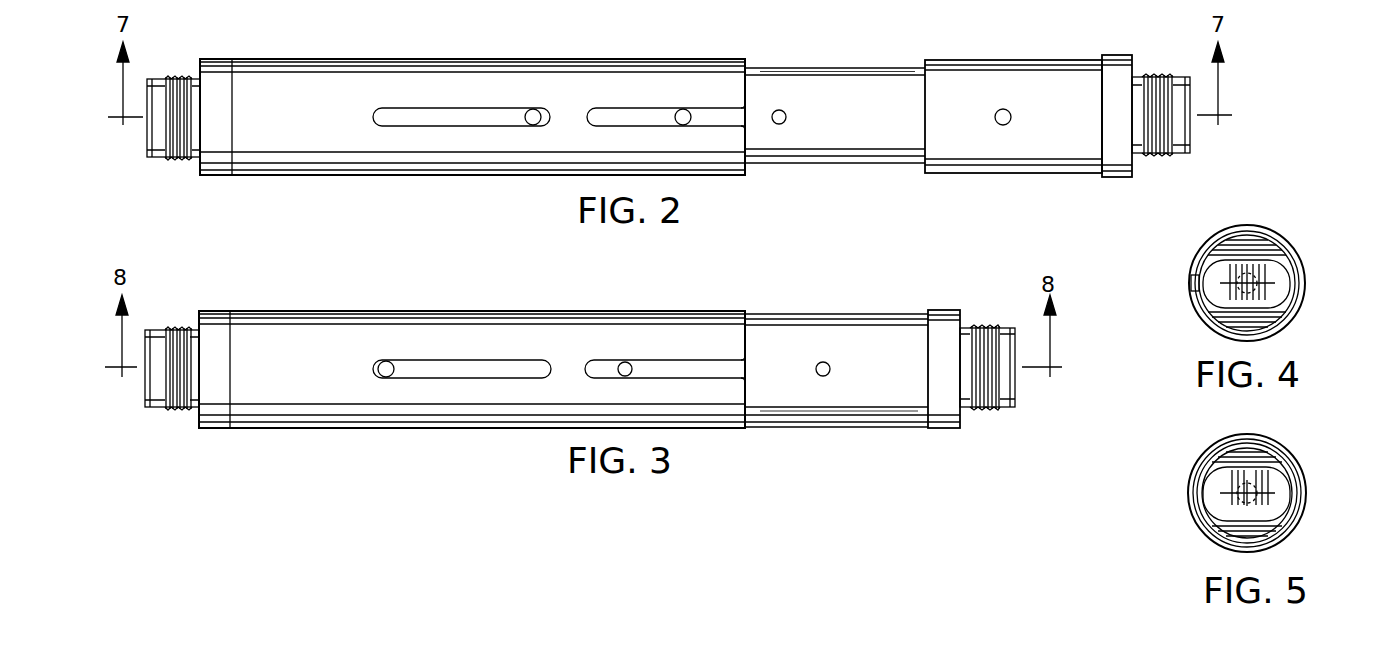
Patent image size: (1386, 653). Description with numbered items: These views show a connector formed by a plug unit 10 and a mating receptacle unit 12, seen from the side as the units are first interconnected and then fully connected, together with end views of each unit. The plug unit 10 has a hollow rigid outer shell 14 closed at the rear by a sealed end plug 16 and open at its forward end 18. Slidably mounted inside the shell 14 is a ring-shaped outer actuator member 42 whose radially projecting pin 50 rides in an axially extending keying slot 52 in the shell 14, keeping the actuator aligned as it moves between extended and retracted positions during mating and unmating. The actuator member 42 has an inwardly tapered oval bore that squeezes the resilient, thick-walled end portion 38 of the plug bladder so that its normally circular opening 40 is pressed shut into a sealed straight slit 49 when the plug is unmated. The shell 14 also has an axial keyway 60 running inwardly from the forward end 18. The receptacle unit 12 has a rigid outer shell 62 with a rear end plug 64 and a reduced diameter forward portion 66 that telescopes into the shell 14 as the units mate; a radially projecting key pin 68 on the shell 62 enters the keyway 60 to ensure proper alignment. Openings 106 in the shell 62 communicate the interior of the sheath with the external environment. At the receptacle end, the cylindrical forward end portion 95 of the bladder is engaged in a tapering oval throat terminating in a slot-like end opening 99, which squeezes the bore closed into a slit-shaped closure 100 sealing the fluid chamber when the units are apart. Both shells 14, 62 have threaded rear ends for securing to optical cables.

In FIG. 2, the plug unit 10 is at (395, 179).
In FIG. 3, the plug unit 10 is at (368, 431).
In FIG. 4, the plug unit 10 is at (1247, 225).
In FIG. 2, the receptacle unit 12 is at (870, 170).
In FIG. 3, the receptacle unit 12 is at (818, 431).
In FIG. 5, the receptacle unit 12 is at (1274, 437).
In FIG. 2, the outer body or shell 14 is at (480, 78).
In FIG. 3, the outer body or shell 14 is at (580, 333).
In FIG. 4, the outer body or shell 14 is at (1193, 258).
In FIG. 2, the rear end wall or end plug 16 is at (216, 61).
In FIG. 3, the rear end wall or end plug 16 is at (216, 313).
In FIG. 2, the open forward end 18 is at (748, 172).
In FIG. 4, the end portion 38 is at (1282, 268).
In FIG. 4, the opening 40 is at (1296, 309).
In FIG. 4, the outer actuator member 42 is at (1258, 243).
In FIG. 4, the slit 49 is at (1227, 283).
In FIG. 2, the pin or stud 50 is at (534, 109).
In FIG. 3, the pin or stud 50 is at (387, 361).
In FIG. 2, the keying slot 52 is at (400, 125).
In FIG. 3, the keying slot 52 is at (492, 377).
In FIG. 2, the keyway or slot 60 is at (640, 126).
In FIG. 3, the keyway or slot 60 is at (690, 378).
In FIG. 4, the keyway or slot 60 is at (1192, 286).
In FIG. 2, the outer shell 62 is at (1055, 150).
In FIG. 3, the outer shell 62 is at (900, 412).
In FIG. 5, the outer shell 62 is at (1220, 445).
In FIG. 2, the rear end plug or closure 64 is at (1118, 60).
In FIG. 3, the rear end plug or closure 64 is at (942, 310).
In FIG. 2, the reduced diameter forward portion 66 is at (885, 80).
In FIG. 5, the reduced diameter forward portion 66 is at (1298, 522).
In FIG. 2, the key pin 68 is at (780, 110).
In FIG. 3, the key pin 68 is at (626, 362).
In FIG. 5, the forward end portion 95 is at (1275, 470).
In FIG. 5, the end opening 99 is at (1215, 481).
In FIG. 5, the slit-shaped closure 100 is at (1235, 496).
In FIG. 2, the openings 106 is at (683, 109).
In FIG. 3, the openings 106 is at (825, 362).